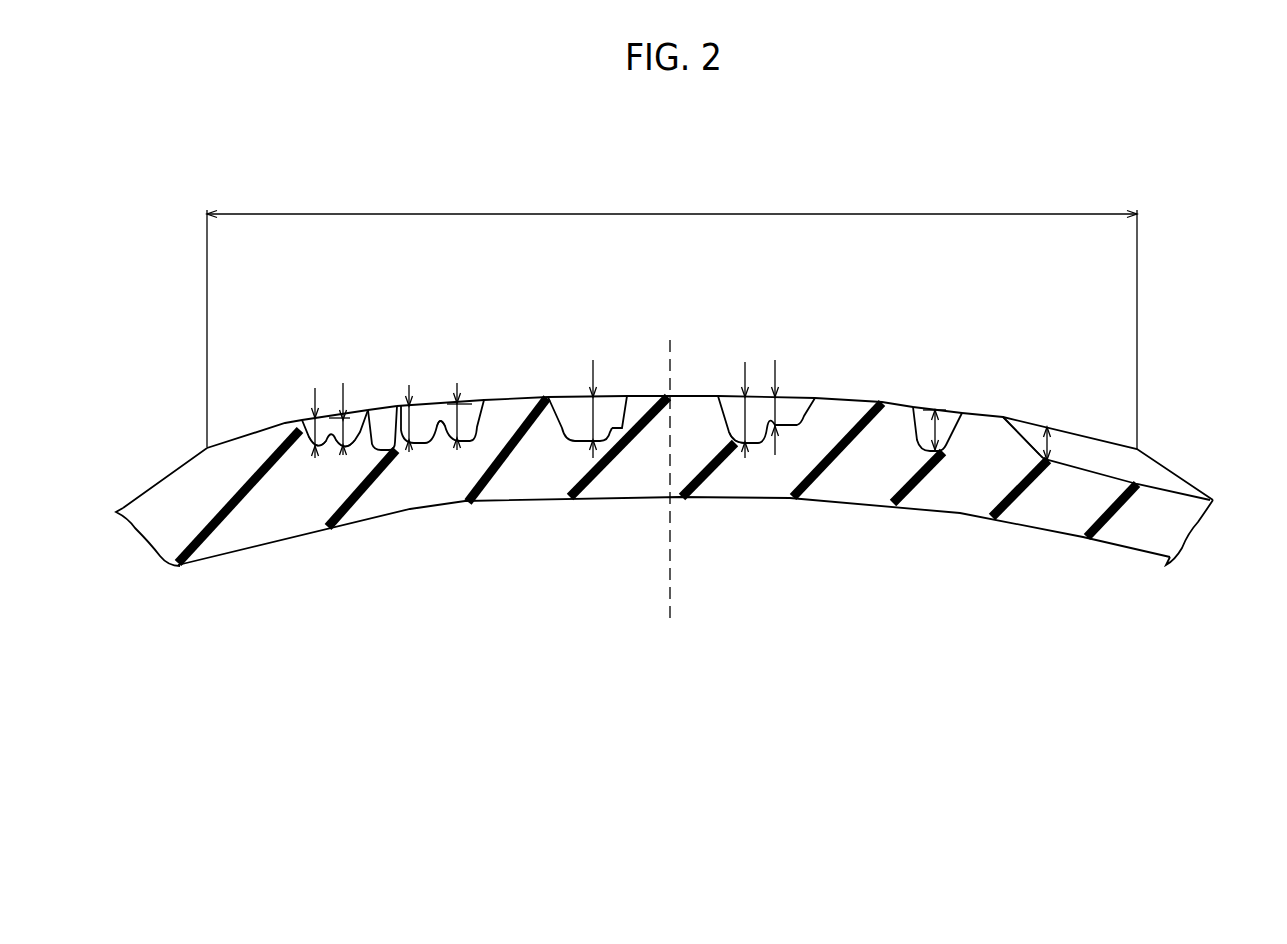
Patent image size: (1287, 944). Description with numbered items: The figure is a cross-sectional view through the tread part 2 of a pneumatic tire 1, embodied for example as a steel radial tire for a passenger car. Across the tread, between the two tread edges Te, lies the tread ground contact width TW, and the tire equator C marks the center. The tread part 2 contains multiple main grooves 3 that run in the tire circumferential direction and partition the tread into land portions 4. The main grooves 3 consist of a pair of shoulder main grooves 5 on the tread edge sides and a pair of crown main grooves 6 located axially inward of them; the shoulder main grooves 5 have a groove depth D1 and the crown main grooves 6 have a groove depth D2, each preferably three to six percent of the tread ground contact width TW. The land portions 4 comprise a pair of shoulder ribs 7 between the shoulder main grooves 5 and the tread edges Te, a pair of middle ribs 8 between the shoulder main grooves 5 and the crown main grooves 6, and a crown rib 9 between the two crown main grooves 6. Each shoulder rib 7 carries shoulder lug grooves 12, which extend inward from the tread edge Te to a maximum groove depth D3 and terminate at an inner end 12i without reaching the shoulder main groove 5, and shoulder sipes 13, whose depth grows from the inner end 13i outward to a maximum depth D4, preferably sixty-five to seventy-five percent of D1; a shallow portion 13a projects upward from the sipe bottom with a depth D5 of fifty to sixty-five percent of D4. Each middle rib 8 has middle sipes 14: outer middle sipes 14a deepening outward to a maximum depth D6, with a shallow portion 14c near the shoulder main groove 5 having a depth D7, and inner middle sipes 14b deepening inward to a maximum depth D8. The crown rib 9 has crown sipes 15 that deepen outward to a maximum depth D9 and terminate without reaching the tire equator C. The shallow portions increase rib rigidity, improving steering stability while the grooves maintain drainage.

The pneumatic tire 1 is at (1158, 252).
The tread part 2 is at (932, 275).
The main grooves 3 is at (700, 354).
The land portions 4 is at (668, 383).
The shoulder main grooves 5 is at (398, 394).
The crown main grooves 6 is at (570, 392).
The shoulder ribs 7 is at (247, 398).
The middle ribs 8 is at (503, 389).
The crown rib 9 is at (658, 385).
The shoulder lug grooves 12 is at (1087, 450).
The tire axial direction inner end of shoulder lug groove 12i is at (1003, 416).
The shoulder sipes 13 is at (302, 418).
The shallow portion of shoulder sipe 13a is at (322, 416).
The tire axial direction inner end of shoulder sipe 13i is at (368, 408).
The middle sipes 14 is at (628, 371).
The outer middle sipes 14a is at (476, 412).
The inner middle sipes 14b is at (796, 398).
The shallow portion of outer middle sipe 14c is at (440, 420).
The crown sipes 15 is at (622, 426).
The tread edge Te is at (205, 447).
The tread ground contact width TW is at (672, 201).
The tire equator C is at (670, 502).
The groove depth of shoulder main groove D1 is at (913, 430).
The groove depth of crown main groove D2 is at (746, 420).
The maximum groove depth of shoulder lug groove D3 is at (1050, 443).
The maximum depth of shoulder sipe D4 is at (350, 452).
The depth of shallow portion of shoulder sipe D5 is at (310, 452).
The maximum depth of outer middle sipe D6 is at (470, 445).
The depth of shallow portion of outer middle sipe D7 is at (410, 452).
The maximum depth of inner middle sipe D8 is at (758, 415).
The maximum depth of crown sipe D9 is at (592, 412).